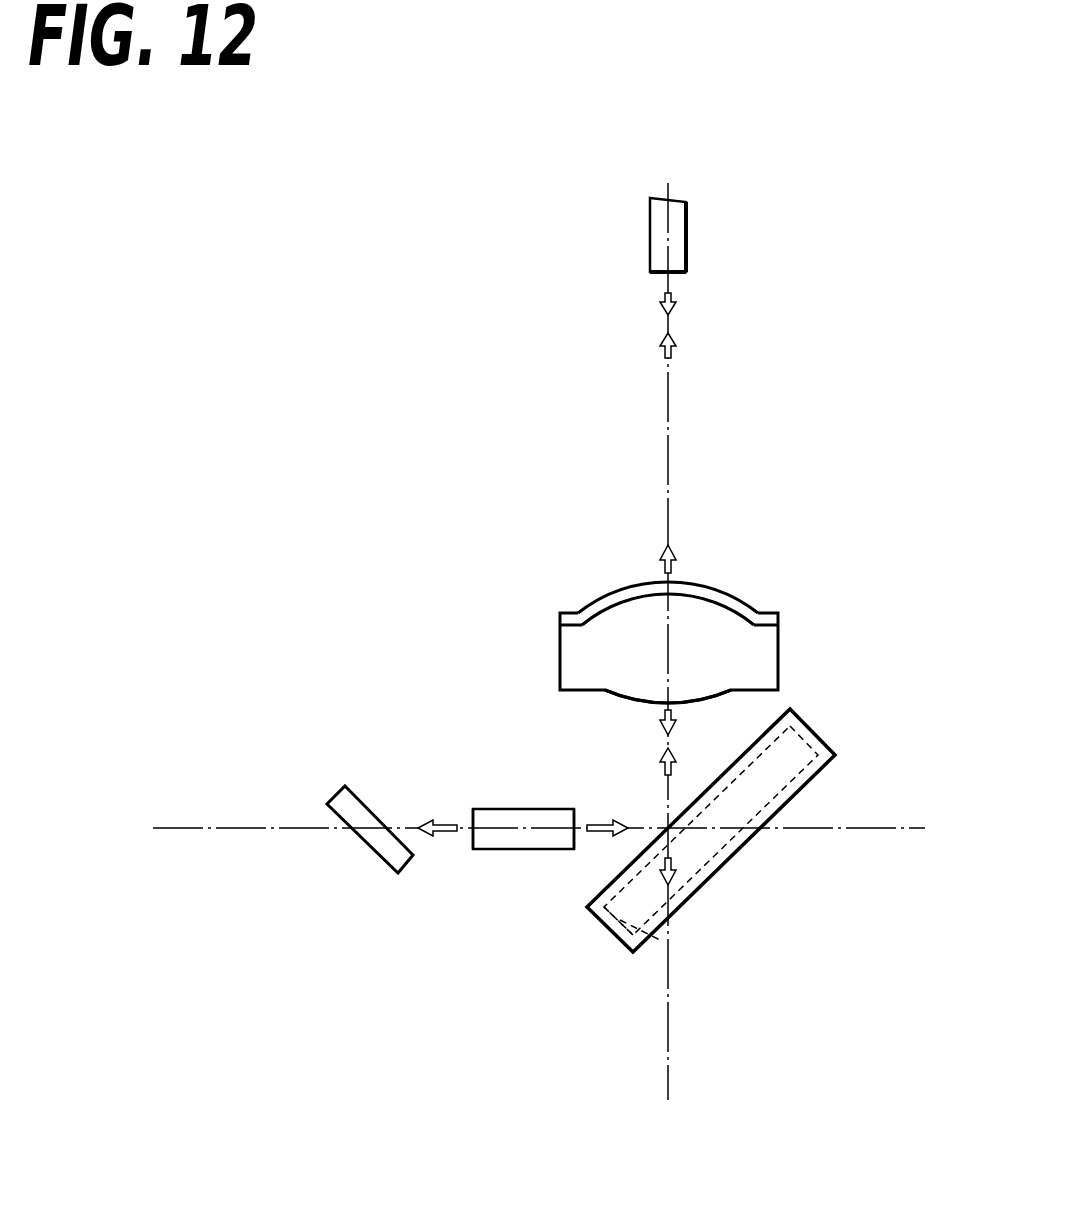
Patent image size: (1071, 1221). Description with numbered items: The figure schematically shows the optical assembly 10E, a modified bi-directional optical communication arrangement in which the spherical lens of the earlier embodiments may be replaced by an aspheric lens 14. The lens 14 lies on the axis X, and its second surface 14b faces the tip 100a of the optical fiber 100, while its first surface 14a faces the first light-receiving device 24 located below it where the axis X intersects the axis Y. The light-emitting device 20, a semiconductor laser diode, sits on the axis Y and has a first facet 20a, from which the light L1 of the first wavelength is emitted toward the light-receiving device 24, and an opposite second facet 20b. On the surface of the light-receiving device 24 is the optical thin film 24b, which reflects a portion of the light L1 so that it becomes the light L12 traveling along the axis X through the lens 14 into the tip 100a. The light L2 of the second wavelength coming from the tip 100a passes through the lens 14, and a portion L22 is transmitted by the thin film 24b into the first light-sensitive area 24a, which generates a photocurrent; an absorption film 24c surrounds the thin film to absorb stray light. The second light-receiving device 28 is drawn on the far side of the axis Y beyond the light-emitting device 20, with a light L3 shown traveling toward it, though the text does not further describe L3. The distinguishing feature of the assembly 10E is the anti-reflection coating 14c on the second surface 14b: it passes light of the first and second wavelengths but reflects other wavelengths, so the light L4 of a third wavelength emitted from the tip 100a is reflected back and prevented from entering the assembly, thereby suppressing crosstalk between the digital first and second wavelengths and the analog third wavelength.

The optical assembly 10E is at (830, 513).
The lens 14 is at (762, 662).
The first surface of the lens 14a is at (725, 694).
The second surface of the lens 14b is at (735, 603).
The anti-reflection coating 14c is at (612, 594).
The light-emitting device 20 is at (527, 835).
The first facet 20a is at (574, 818).
The second facet 20b is at (473, 818).
The first light-receiving device 24 is at (757, 838).
The first light-sensitive area 24a is at (687, 903).
The optical thin film 24b is at (607, 907).
The absorption film 24c is at (613, 928).
The second light-receiving device 28 is at (372, 832).
The optical fiber 100 is at (686, 236).
The tip of the optical fiber 100a is at (678, 274).
The light L1 is at (600, 825).
The light L2 is at (672, 305).
The light beam L3 is at (436, 825).
The light L4 is at (672, 348).
The light L12 is at (662, 762).
The light L22 is at (675, 870).
The axis X is at (668, 192).
The axis Y is at (866, 828).